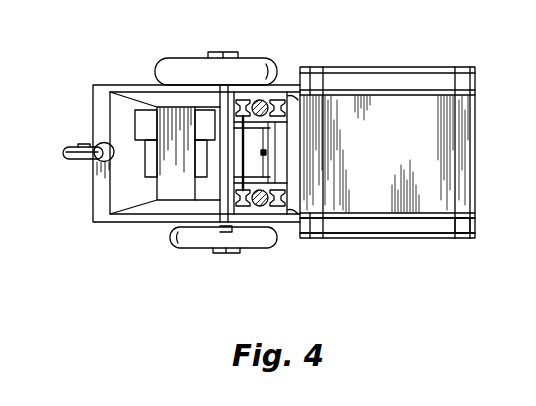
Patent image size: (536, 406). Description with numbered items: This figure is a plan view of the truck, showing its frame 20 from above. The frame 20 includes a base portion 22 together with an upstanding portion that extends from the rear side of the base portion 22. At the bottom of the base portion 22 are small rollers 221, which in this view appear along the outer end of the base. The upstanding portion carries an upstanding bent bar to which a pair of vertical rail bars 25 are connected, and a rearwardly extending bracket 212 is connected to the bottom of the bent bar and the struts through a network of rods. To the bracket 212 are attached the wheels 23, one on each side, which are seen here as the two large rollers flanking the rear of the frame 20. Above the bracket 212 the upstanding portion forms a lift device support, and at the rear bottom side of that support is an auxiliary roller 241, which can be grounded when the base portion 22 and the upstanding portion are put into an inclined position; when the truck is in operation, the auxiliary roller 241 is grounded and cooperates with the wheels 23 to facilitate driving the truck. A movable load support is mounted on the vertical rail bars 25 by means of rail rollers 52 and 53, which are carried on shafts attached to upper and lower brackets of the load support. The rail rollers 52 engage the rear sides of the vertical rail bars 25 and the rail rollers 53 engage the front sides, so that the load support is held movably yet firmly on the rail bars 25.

The frame 20 is at (375, 242).
The base portion 22 is at (420, 239).
The small rollers 221 is at (463, 227).
The wheels 23 is at (188, 58).
The bracket 212 is at (226, 231).
The auxiliary roller 241 is at (68, 145).
The vertical rail bars 25 is at (265, 102).
The rail rollers 52 is at (244, 100).
The rail rollers 53 is at (287, 104).